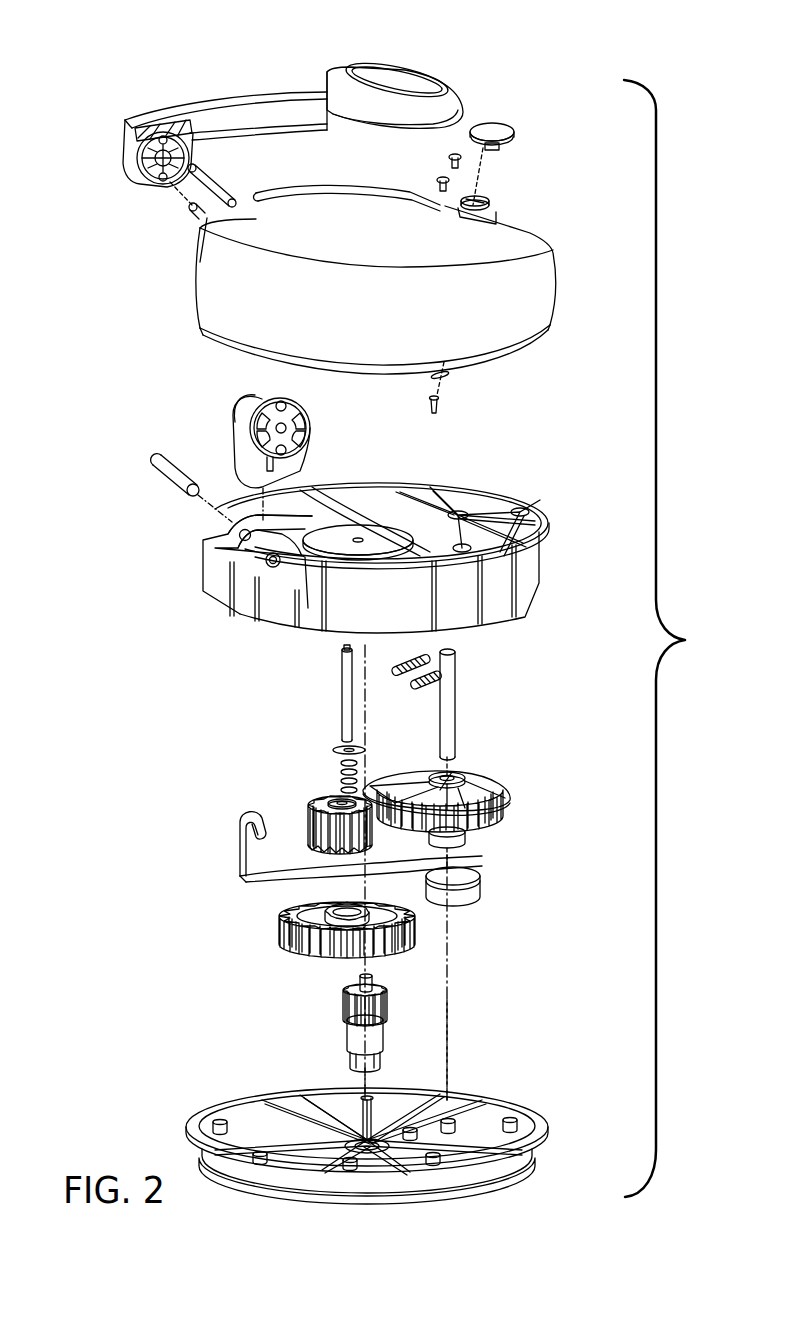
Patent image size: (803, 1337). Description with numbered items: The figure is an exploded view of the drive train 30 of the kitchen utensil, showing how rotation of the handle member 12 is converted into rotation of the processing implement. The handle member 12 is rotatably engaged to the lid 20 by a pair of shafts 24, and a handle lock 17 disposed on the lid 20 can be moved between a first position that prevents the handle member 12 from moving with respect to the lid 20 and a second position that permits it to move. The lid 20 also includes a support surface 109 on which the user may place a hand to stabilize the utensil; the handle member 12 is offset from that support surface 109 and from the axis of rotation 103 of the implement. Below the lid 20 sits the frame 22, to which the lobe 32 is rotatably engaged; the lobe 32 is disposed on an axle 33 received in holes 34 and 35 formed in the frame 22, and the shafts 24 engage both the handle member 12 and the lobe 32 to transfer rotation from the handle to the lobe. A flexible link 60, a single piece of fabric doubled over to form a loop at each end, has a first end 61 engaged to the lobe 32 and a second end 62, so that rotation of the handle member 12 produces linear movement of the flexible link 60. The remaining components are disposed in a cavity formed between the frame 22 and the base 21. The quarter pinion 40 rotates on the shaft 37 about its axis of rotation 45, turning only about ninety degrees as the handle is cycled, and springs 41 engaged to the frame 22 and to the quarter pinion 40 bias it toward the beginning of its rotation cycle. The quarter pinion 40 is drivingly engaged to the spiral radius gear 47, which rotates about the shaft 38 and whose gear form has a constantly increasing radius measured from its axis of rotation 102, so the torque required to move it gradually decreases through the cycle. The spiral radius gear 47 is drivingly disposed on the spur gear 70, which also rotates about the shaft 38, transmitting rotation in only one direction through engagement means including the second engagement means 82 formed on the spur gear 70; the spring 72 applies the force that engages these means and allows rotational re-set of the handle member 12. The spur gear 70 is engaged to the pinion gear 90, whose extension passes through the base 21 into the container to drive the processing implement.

The handle member 12 is at (266, 121).
The handle lock 17 is at (497, 127).
The support surface 109 is at (536, 243).
The lid 20 is at (346, 316).
The shafts 24 is at (195, 196).
The lobe 32 is at (307, 427).
The axle 33 is at (170, 477).
The hole 35 is at (215, 552).
The hole 34 is at (273, 570).
The frame 22 is at (363, 609).
The shaft 38 is at (343, 695).
The shaft 37 is at (457, 695).
The springs 41 is at (420, 687).
The spring 72 is at (340, 762).
The spiral radius gear 47 is at (308, 814).
The quarter pinion 40 is at (490, 803).
The first end 61 is at (266, 830).
The flexible link 60 is at (470, 882).
The second end 62 is at (452, 895).
The second engagement means 82 is at (283, 928).
The spur gear 70 is at (320, 957).
The axis of rotation 103 is at (372, 972).
The pinion gear 90 is at (343, 1025).
The axis of rotation 45 is at (450, 1040).
The axis of rotation 102 is at (347, 1077).
The base 21 is at (513, 1178).
The drive train 30 is at (685, 640).